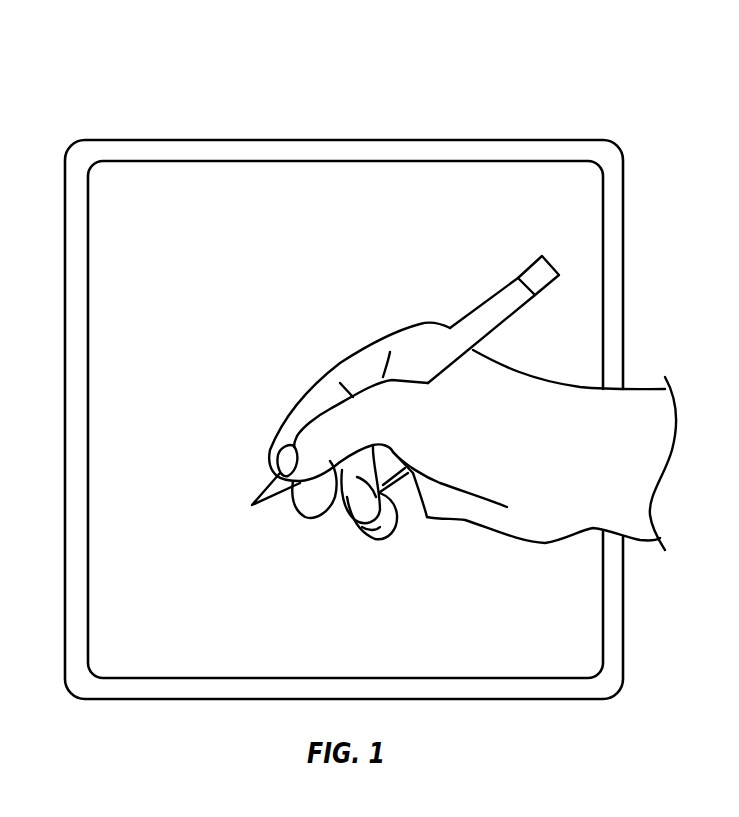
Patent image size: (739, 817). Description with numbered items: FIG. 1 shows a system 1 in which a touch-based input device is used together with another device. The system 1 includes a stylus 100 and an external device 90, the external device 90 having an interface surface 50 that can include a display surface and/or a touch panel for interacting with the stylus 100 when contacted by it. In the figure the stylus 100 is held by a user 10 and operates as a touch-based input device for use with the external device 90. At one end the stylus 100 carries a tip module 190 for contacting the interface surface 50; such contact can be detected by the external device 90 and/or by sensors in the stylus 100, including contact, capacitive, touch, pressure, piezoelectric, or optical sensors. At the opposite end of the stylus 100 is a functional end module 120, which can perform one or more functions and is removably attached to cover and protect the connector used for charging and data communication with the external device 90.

The system 1 is at (78, 92).
The external device 90 is at (343, 140).
The interface surface 50 is at (460, 161).
The stylus 100 is at (492, 295).
The functional end module 120 is at (527, 262).
The tip module 190 is at (262, 487).
The user 10 is at (553, 387).